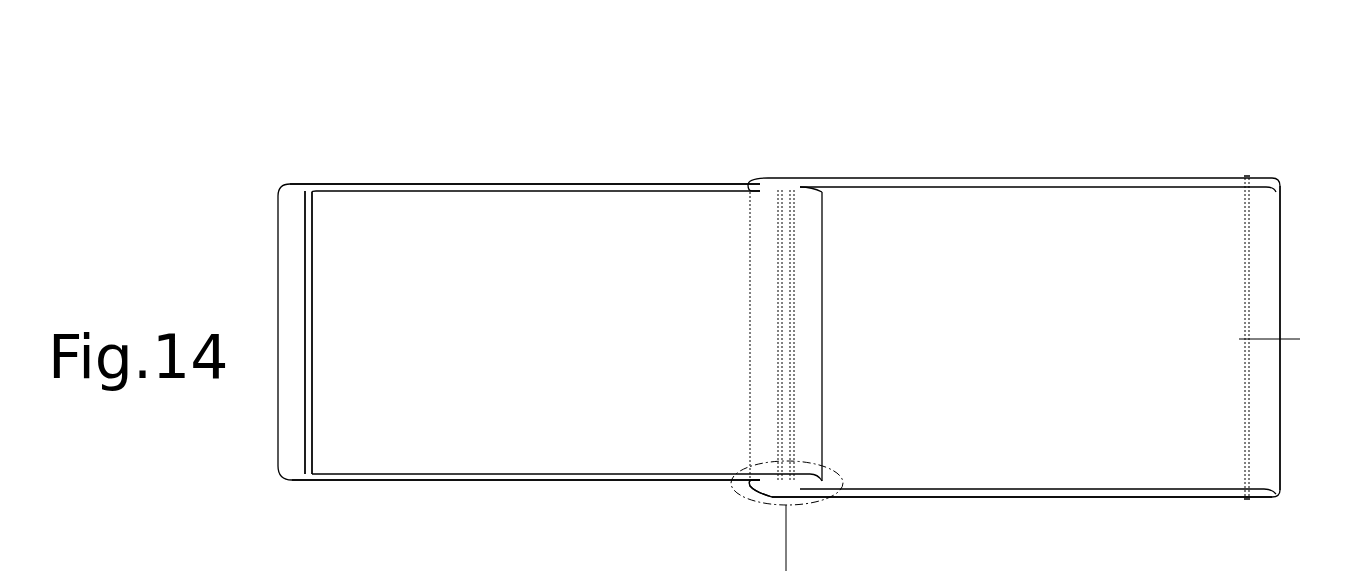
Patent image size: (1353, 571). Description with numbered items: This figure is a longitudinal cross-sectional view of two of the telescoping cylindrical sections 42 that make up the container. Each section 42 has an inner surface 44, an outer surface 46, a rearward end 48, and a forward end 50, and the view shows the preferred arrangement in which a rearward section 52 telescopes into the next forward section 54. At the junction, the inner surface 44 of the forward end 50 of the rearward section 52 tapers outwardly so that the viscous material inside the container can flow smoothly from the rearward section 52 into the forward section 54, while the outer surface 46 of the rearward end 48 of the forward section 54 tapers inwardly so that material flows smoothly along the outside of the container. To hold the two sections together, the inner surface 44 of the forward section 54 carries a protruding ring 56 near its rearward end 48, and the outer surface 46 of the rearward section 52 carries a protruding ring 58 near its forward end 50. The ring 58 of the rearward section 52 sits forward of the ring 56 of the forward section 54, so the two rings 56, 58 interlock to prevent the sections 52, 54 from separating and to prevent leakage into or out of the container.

The cylindrical section 42 is at (1057, 130).
The inner surface 44 is at (508, 196).
The outer surface 46 is at (645, 180).
The rearward end 48 is at (755, 174).
The forward end 50 is at (1263, 172).
The rearward section 52 is at (508, 490).
The forward section 54 is at (1097, 500).
The protruding ring 56 is at (328, 411).
The protruding ring 58 is at (802, 170).